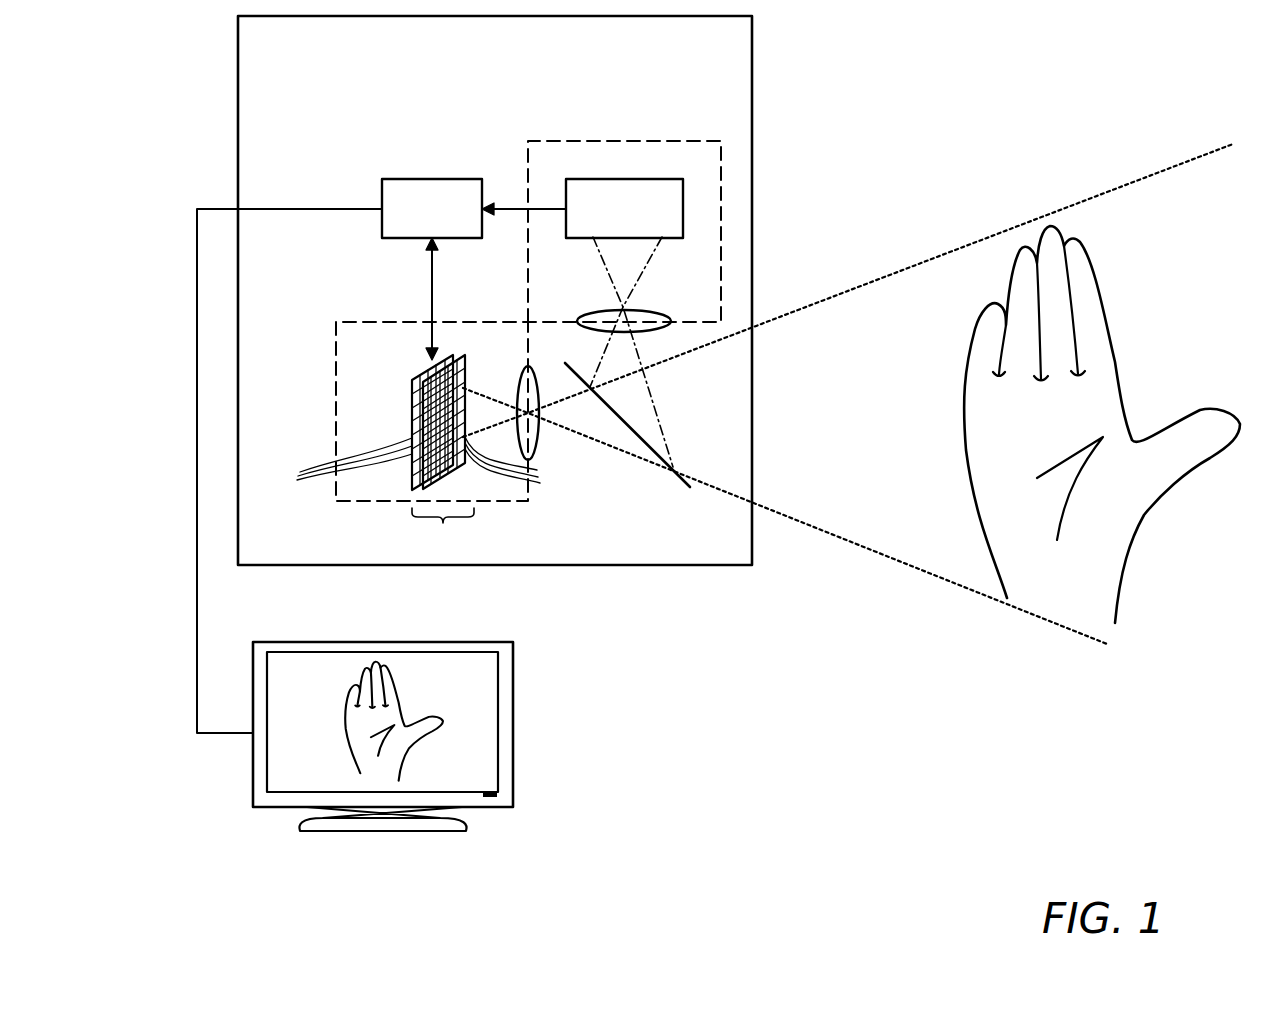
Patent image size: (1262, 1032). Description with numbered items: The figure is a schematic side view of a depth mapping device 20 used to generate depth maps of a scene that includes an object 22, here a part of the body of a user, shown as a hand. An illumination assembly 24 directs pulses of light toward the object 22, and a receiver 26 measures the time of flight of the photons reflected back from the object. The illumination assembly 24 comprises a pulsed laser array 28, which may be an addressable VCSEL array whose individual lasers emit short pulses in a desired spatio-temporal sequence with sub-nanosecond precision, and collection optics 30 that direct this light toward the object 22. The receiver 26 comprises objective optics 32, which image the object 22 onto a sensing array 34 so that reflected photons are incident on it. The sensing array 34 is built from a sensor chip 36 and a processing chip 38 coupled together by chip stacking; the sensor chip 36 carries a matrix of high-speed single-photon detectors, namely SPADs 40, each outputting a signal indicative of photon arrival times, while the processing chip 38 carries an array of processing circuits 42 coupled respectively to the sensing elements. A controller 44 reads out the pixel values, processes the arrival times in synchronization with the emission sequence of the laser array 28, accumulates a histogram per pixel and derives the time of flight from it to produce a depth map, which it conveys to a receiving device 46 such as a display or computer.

The depth mapping device 20 is at (237, 168).
The object 22 is at (1124, 356).
The illumination assembly 24 is at (565, 141).
The receiver 26 is at (336, 353).
The pulsed laser array 28 is at (610, 223).
The collection optics 30 is at (662, 318).
The objective optics 32 is at (540, 447).
The sensing array 34 is at (427, 421).
The sensor chip 36 is at (466, 354).
The processing chip 38 is at (412, 404).
The SPADs 40 is at (520, 472).
The processing circuits 42 is at (341, 470).
The controller 44 is at (382, 190).
The receiving device 46 is at (513, 682).